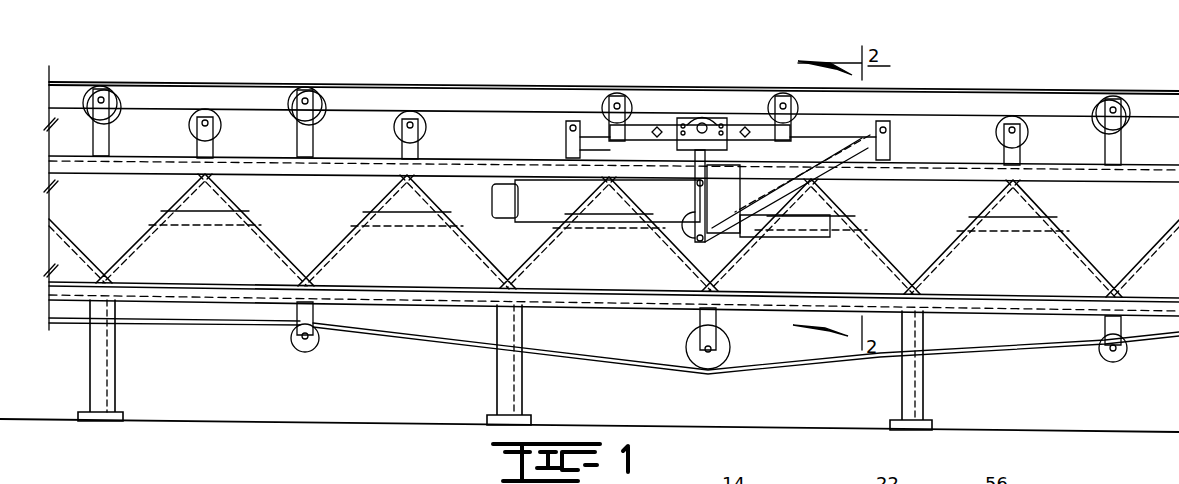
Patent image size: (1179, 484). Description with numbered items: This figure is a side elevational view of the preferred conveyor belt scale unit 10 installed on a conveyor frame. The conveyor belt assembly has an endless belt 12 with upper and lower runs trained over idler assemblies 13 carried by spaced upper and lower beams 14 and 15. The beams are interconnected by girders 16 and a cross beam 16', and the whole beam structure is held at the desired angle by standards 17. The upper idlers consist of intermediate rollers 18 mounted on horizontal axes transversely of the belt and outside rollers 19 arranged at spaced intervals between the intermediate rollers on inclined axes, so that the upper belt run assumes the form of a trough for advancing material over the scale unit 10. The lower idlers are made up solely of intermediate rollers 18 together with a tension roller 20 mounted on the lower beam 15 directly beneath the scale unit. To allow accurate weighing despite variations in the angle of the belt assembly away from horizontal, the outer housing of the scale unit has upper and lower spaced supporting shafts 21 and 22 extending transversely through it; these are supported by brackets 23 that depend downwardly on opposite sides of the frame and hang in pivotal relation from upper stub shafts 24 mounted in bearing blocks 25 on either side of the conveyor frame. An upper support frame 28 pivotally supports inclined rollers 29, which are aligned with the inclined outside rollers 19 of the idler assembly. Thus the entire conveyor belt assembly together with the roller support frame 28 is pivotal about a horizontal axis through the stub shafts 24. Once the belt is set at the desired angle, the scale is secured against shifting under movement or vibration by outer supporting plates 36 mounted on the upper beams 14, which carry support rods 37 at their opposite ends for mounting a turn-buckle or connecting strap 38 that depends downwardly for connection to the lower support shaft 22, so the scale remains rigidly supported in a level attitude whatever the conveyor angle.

The conveyor belt scale unit 10 is at (611, 207).
The endless belt 12 is at (404, 84).
The idler assemblies 13 is at (84, 125).
The upper beam 14 is at (301, 173).
The lower beam 15 is at (393, 286).
The girders 16 is at (614, 235).
The cross beam 16' is at (609, 238).
The standards 17 is at (115, 392).
The intermediate rollers 18 is at (190, 126).
The outside rollers 19 is at (95, 88).
The tension roller 20 is at (731, 347).
The upper supporting shaft 21 is at (704, 183).
The lower support shaft 22 is at (757, 207).
The brackets 23 is at (694, 241).
The upper stub shafts 24 is at (704, 122).
The bearing blocks 25 is at (690, 118).
The upper support frame 28 is at (822, 136).
The inclined rollers 29 is at (604, 95).
The outer supporting plates 36 is at (566, 150).
The support rods 37 is at (566, 126).
The connecting strap 38 is at (756, 208).